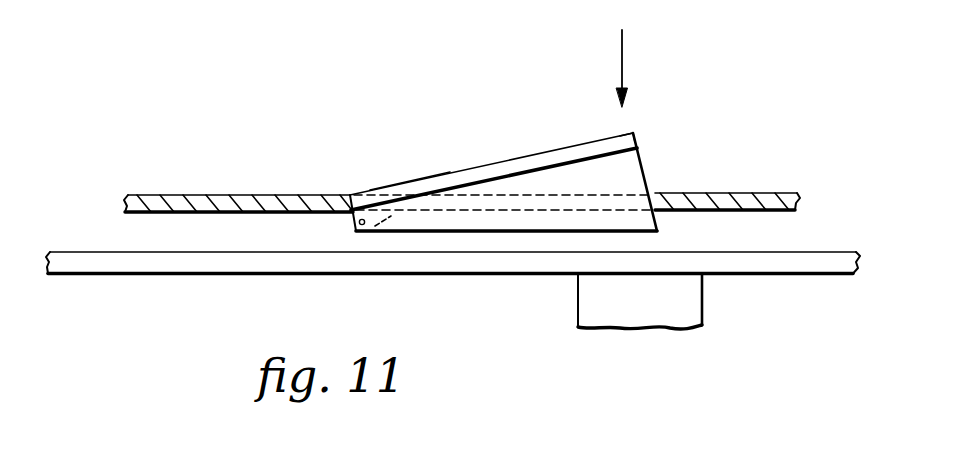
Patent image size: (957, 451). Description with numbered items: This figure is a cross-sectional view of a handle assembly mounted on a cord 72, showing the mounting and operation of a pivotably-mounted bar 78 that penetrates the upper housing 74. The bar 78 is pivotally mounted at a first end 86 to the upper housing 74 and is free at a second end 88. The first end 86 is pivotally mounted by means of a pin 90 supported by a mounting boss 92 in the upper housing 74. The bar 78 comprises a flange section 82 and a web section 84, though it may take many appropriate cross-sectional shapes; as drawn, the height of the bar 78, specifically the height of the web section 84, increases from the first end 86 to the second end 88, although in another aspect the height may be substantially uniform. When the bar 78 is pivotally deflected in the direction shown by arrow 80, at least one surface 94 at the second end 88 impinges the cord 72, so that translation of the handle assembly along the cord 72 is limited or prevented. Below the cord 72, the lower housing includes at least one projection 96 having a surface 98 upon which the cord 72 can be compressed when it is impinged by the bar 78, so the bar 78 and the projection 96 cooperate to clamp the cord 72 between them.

The cord 72 is at (147, 276).
The upper housing 74 is at (172, 194).
The pivotably-mounted bar 78 is at (458, 168).
The arrow 80 is at (623, 55).
The flange section 82 is at (552, 164).
The web section 84 is at (641, 163).
The first end 86 is at (388, 184).
The second end 88 is at (635, 131).
The pin 90 is at (363, 225).
The mounting boss 92 is at (350, 214).
The surface 94 is at (630, 235).
The projection 96 is at (702, 300).
The surface 98 is at (612, 276).